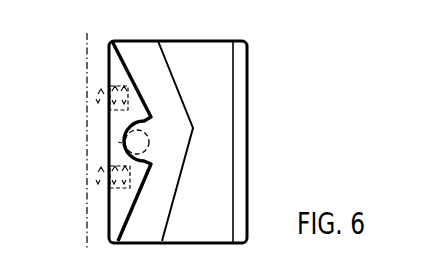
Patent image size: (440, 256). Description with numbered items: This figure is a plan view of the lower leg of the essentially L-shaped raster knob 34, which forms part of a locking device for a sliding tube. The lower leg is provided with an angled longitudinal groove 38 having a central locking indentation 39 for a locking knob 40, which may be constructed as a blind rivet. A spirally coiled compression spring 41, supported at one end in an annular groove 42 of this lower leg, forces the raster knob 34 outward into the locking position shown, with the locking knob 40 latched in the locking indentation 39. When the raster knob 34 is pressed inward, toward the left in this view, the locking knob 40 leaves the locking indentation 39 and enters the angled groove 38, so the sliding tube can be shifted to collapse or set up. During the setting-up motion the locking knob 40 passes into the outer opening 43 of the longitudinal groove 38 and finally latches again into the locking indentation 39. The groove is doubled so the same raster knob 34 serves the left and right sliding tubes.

The raster knob 34 is at (250, 107).
The angled longitudinal groove 38 is at (168, 83).
The locking indentation 39 is at (122, 143).
The locking knob 40 is at (148, 142).
The spirally coiled compression spring 41 is at (88, 97).
The annular groove 42 is at (118, 83).
The outer opening 43 is at (138, 47).